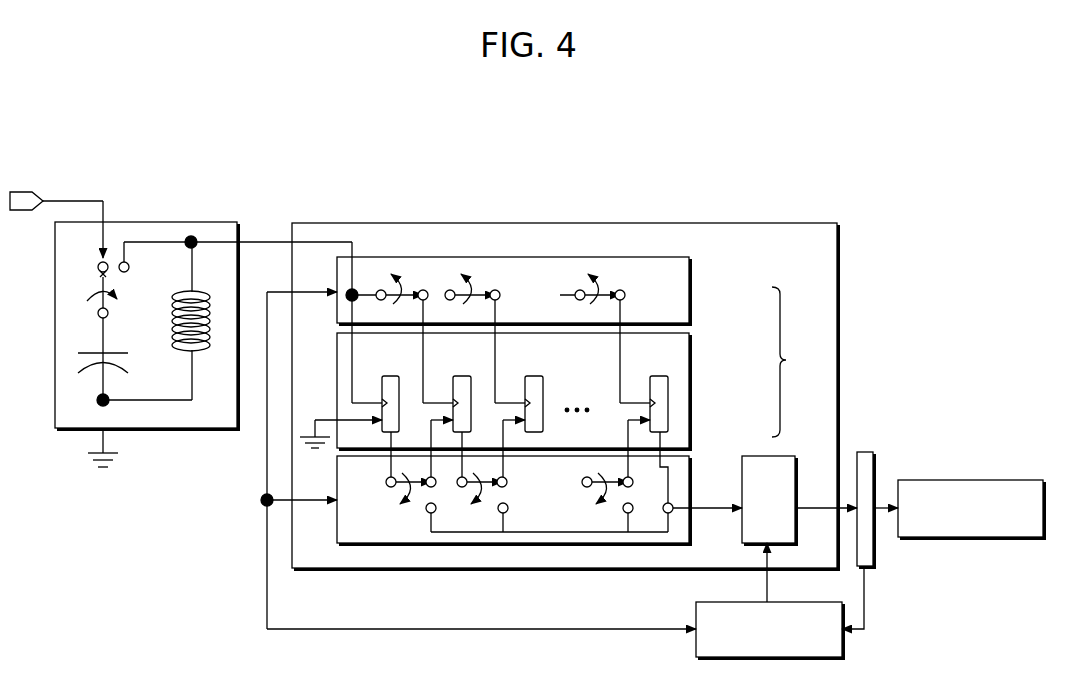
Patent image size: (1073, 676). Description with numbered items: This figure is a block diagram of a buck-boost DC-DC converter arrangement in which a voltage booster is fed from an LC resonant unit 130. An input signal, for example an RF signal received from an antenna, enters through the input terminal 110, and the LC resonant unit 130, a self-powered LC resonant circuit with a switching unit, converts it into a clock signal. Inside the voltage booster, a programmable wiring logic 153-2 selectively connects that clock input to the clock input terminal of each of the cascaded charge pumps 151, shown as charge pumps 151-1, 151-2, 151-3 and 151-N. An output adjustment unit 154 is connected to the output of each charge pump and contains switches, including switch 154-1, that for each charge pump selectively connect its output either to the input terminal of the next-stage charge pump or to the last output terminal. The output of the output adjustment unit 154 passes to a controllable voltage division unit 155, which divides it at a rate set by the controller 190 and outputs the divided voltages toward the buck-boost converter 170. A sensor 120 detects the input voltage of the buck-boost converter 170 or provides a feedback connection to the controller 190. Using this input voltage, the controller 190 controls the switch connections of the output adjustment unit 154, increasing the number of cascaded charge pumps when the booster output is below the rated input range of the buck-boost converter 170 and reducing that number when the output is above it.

The input terminal 110 is at (30, 188).
The LC resonant unit 130 is at (167, 222).
The programmable wiring logic 153-2 is at (695, 289).
The charge pumps 151 is at (526, 391).
The charge pump 151-1 is at (388, 376).
The charge pump 151-2 is at (460, 376).
The charge pump 151-3 is at (532, 376).
The charge pump 151-N is at (657, 376).
The switch 154-1 is at (692, 458).
The output adjustment unit 154 is at (796, 362).
The controllable voltage division unit 155 is at (783, 456).
The sensor 120 is at (868, 452).
The buck-boost converter 170 is at (983, 480).
The controller 190 is at (777, 601).